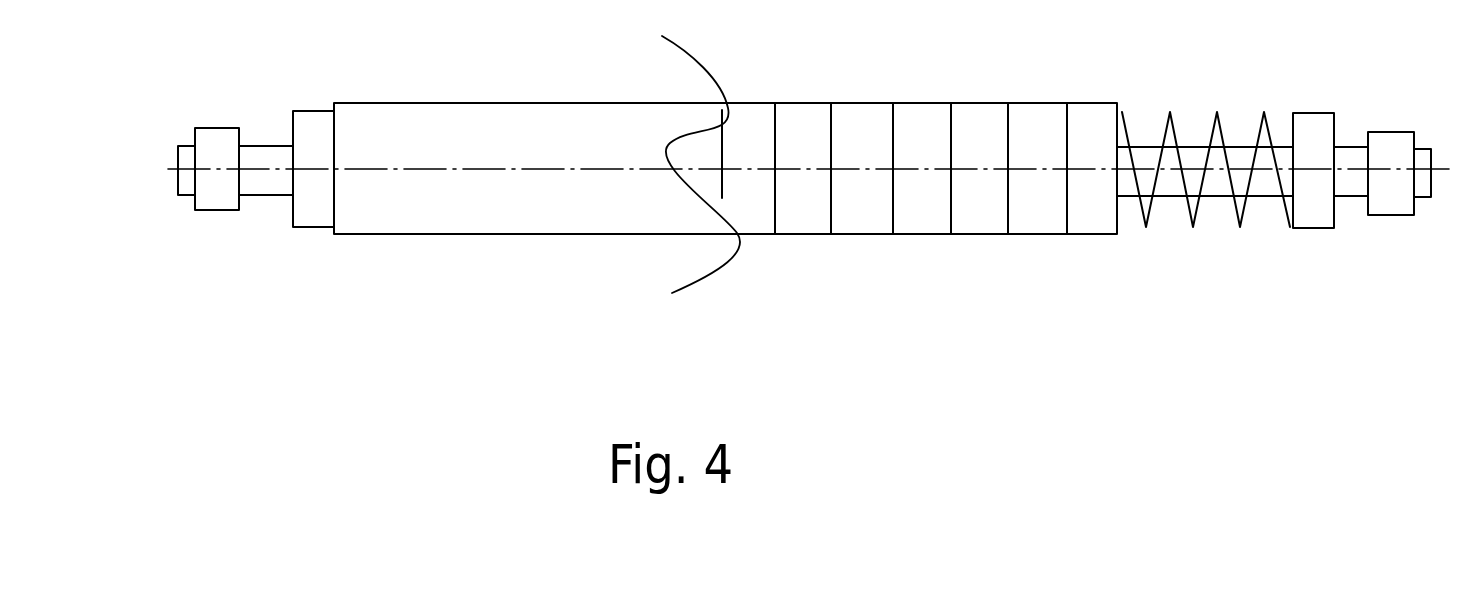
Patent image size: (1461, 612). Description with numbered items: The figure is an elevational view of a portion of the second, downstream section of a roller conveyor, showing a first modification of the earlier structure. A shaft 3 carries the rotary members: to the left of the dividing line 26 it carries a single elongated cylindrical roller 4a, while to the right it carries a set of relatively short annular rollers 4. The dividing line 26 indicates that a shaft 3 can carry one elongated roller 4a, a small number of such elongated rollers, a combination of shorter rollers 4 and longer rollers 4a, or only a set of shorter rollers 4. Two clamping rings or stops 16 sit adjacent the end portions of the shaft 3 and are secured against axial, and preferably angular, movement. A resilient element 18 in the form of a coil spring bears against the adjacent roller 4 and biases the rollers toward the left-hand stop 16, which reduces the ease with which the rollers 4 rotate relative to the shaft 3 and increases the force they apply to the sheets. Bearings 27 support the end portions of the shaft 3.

The shaft 3 is at (265, 196).
The roller 4 is at (921, 209).
The elongated cylindrical roller 4a is at (457, 235).
The clamping ring or stop 16 is at (304, 130).
The resilient element 18 is at (1190, 215).
The dividing line 26 is at (672, 293).
The bearing 27 is at (210, 192).